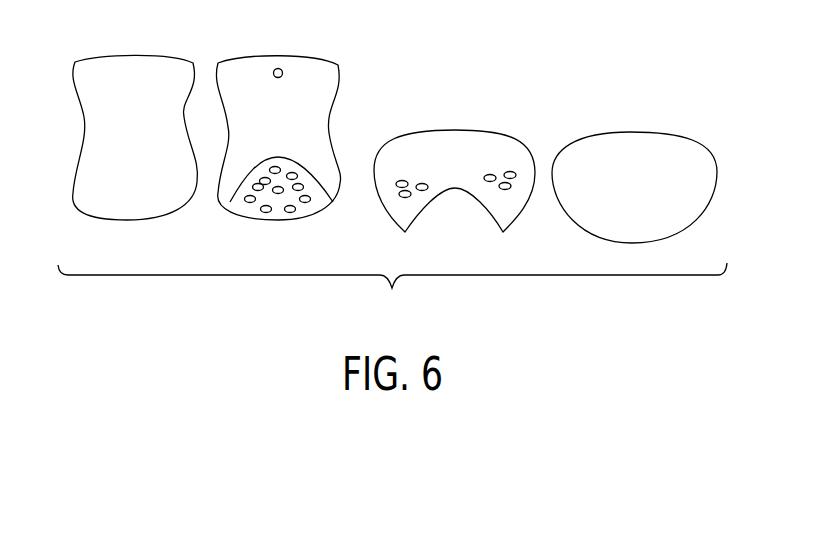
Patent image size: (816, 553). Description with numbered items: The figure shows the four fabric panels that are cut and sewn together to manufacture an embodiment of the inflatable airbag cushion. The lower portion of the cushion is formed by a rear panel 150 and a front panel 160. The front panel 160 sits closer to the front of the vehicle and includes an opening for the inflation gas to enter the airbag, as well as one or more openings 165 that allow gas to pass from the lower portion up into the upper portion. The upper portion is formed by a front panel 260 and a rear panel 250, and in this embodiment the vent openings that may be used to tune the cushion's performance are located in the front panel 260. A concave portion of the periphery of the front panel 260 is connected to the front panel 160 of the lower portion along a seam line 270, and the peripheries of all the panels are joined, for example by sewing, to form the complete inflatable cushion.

The rear panel 150 is at (128, 72).
The front panel 160 is at (247, 78).
The openings 165 is at (277, 200).
The seam line 270 is at (305, 175).
The front panel 260 is at (442, 145).
The rear panel 250 is at (600, 143).